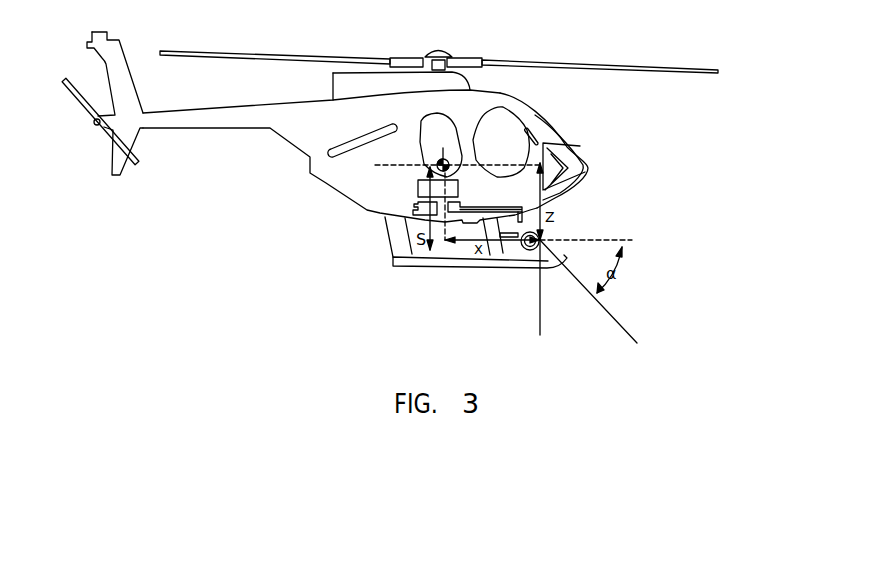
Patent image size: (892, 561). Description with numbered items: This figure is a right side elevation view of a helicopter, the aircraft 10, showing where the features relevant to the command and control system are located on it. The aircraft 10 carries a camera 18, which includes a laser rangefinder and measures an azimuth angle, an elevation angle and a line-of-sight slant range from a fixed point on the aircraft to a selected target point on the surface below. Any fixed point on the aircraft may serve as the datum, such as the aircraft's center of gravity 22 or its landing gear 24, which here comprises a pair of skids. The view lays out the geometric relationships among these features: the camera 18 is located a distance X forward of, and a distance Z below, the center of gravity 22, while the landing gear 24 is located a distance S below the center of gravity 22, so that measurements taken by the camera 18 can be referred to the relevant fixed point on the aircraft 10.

The aircraft 10 is at (330, 188).
The camera 18 is at (537, 250).
The center of gravity 22 is at (443, 150).
The landing gear 24 is at (412, 263).